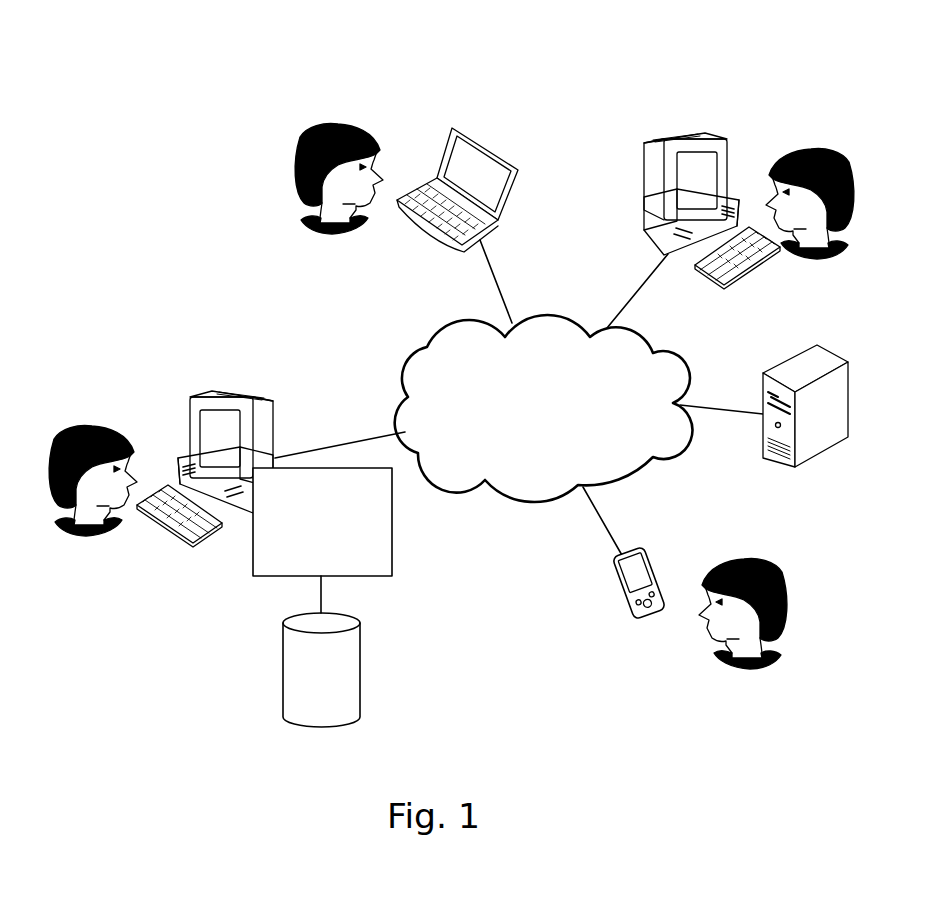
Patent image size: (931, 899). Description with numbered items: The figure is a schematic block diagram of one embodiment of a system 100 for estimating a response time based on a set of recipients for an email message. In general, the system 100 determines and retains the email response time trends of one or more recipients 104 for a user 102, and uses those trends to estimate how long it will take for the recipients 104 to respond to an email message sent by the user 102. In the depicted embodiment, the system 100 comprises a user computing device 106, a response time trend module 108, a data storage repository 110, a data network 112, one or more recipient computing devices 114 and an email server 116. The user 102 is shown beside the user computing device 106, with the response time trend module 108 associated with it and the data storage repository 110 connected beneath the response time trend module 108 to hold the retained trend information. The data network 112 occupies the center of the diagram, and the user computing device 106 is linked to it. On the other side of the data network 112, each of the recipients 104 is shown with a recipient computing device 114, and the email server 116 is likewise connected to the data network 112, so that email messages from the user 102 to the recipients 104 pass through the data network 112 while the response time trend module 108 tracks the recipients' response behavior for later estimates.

The system 100 is at (97, 55).
The user 102 is at (108, 577).
The recipient 104 is at (355, 282).
The user computing device 106 is at (192, 452).
The response time trend module 108 is at (340, 568).
The data storage repository 110 is at (339, 710).
The data network 112 is at (562, 431).
The recipient computing device 114 is at (440, 187).
The email server 116 is at (790, 370).